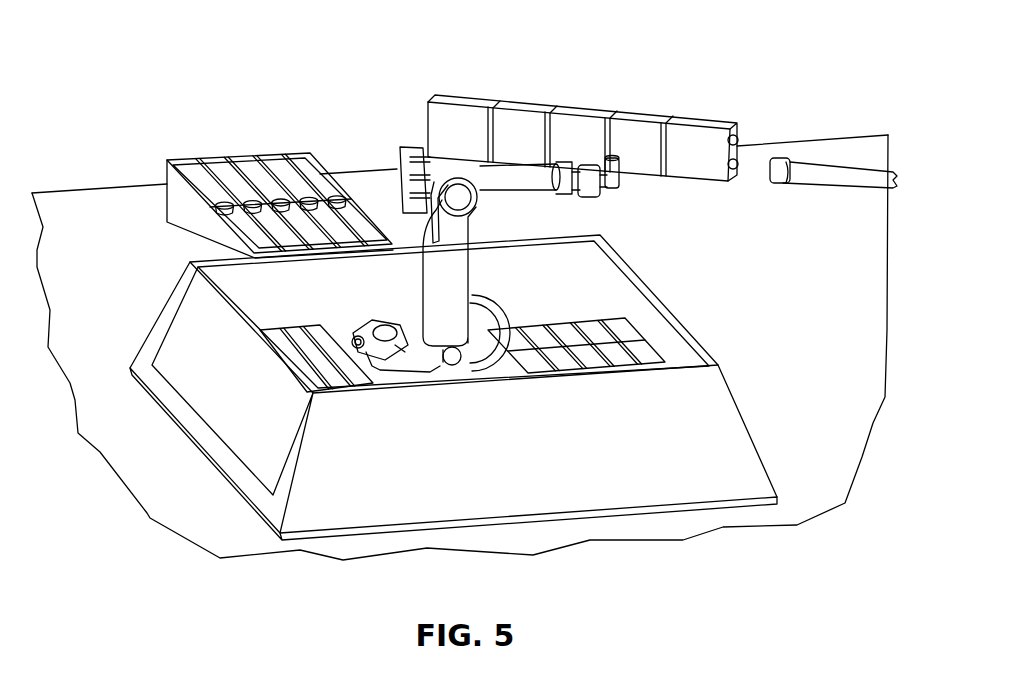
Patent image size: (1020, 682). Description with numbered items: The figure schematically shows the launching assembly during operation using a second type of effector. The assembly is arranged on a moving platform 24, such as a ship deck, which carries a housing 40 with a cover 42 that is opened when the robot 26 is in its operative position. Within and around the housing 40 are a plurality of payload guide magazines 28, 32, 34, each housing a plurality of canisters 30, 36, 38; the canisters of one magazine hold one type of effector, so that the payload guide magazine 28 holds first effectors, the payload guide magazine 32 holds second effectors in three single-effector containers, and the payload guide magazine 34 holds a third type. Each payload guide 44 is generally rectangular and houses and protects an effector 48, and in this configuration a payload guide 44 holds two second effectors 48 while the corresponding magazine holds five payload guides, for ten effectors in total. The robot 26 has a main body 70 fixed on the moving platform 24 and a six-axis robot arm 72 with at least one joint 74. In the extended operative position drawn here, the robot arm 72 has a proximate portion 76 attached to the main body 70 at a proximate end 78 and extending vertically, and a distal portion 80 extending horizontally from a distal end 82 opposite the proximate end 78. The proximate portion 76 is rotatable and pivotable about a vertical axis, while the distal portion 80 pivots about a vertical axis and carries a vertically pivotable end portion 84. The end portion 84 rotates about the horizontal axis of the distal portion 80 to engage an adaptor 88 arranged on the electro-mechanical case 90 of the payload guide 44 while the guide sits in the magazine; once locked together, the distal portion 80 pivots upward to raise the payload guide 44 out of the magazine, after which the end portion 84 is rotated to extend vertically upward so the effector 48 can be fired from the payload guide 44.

The moving platform 24 is at (183, 463).
The robot 26 is at (643, 402).
The payload guide magazine 28 is at (587, 328).
The canister 30 is at (640, 357).
The payload guide magazine 32 is at (272, 333).
The payload guide magazine 34 is at (180, 187).
The canister 36 is at (310, 375).
The canister 38 is at (301, 165).
The housing 40 is at (663, 452).
The cover 42 is at (262, 452).
The payload guide 44 is at (693, 140).
The effector 48 is at (823, 175).
The main body 70 is at (447, 377).
The robot arm 72 is at (490, 190).
The joint 74 is at (372, 312).
The proximate portion 76 is at (455, 272).
The proximate end 78 is at (353, 360).
The distal portion 80 is at (517, 183).
The distal end 82 is at (450, 197).
The end portion 84 is at (608, 173).
The adaptor 88 is at (587, 180).
The electro-mechanical case 90 is at (530, 103).